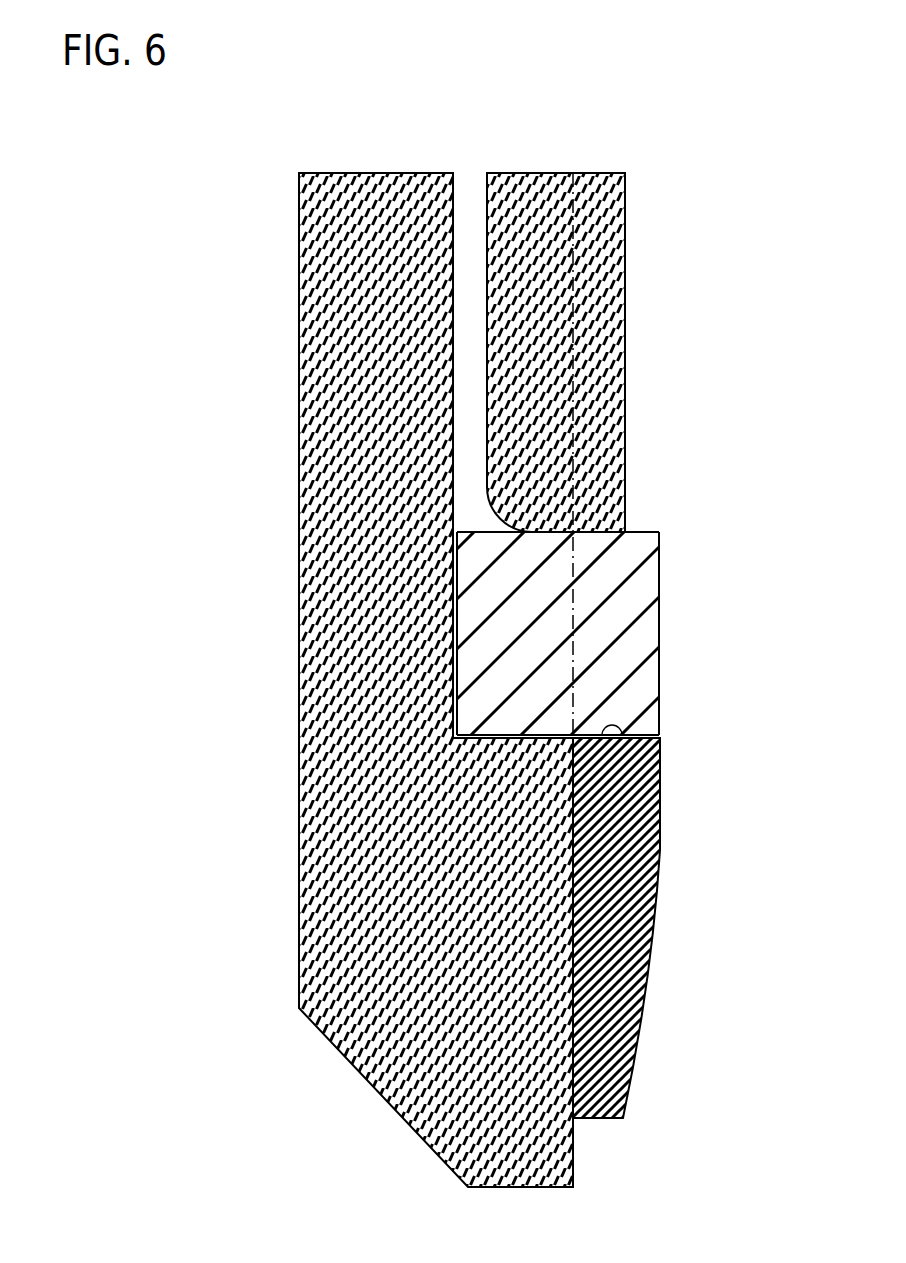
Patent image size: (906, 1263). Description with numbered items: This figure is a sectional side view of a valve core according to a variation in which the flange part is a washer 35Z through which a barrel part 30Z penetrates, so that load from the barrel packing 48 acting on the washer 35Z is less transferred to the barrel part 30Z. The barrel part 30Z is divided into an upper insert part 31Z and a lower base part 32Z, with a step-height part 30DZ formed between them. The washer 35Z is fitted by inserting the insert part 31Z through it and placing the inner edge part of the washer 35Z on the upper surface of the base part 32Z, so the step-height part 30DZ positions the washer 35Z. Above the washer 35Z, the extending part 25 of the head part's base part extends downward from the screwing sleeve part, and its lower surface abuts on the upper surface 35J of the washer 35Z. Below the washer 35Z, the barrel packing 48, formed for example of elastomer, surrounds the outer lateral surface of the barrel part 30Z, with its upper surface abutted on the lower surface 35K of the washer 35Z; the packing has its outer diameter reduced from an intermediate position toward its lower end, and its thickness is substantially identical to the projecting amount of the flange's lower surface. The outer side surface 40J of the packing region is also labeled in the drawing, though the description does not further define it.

The extending part 25 is at (607, 333).
The barrel part 30Z is at (381, 680).
The insert part 31Z is at (327, 301).
The base part 32Z is at (327, 852).
The step-height part 30DZ is at (455, 738).
The washer 35Z is at (547, 633).
The upper surface of the flange part 35J is at (643, 531).
The lower surface of the flange part 35K is at (658, 748).
The side surface 40J is at (658, 777).
The barrel packing 48 is at (664, 928).